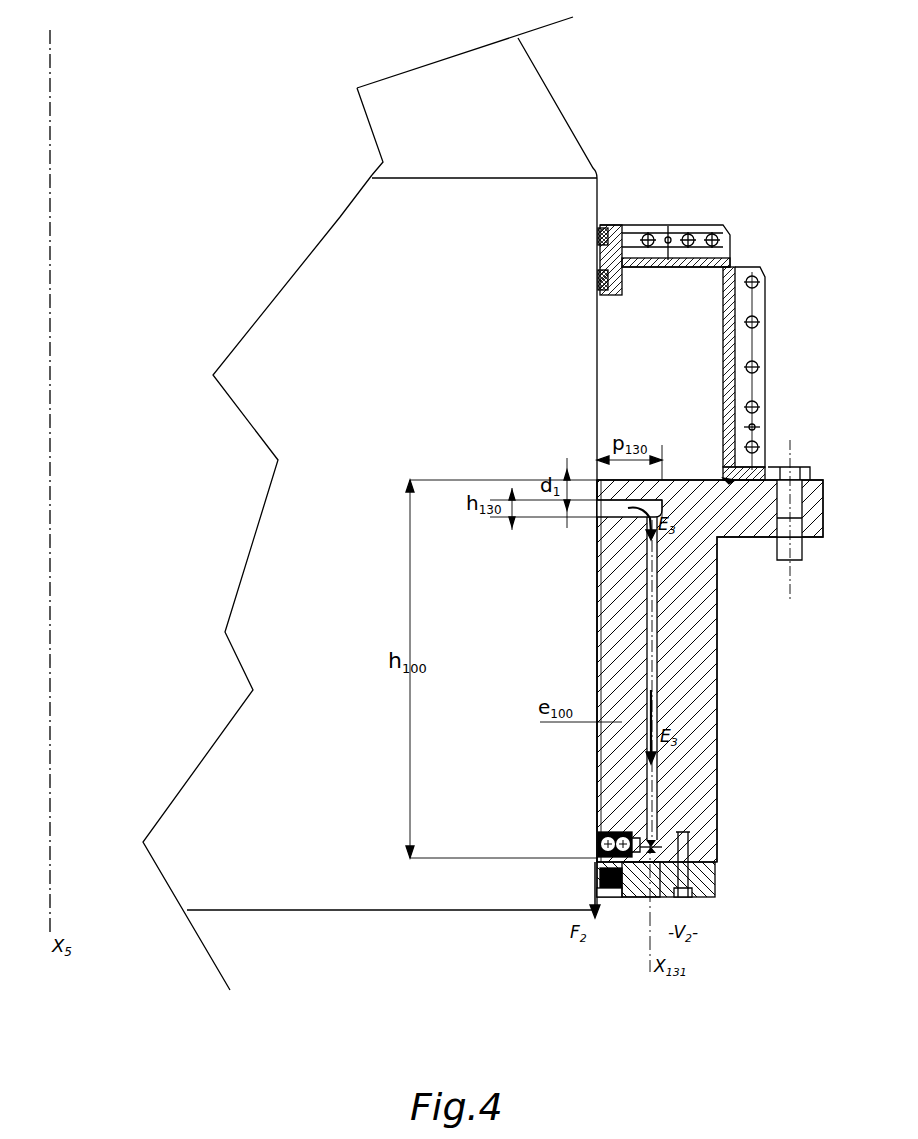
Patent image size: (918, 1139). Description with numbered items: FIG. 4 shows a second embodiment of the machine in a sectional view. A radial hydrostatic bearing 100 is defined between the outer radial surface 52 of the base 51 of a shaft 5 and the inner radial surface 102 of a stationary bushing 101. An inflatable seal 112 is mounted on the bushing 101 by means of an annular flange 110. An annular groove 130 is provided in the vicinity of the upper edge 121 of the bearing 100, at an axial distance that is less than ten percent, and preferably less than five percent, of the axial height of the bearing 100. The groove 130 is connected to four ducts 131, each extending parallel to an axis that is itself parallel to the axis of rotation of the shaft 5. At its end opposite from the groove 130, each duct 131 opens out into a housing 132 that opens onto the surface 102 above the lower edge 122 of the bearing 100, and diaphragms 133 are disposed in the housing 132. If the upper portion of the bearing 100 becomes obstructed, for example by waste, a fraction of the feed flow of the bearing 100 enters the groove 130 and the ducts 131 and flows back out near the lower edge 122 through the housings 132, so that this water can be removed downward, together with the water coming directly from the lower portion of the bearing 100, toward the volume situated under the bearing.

The shaft 5 is at (547, 133).
The base 51 is at (258, 750).
The outer radial surface 52 is at (608, 347).
The radial hydrostatic bearing 100 is at (593, 603).
The stationary bushing 101 is at (705, 745).
The inner radial surface 102 is at (593, 648).
The annular flange 110 is at (717, 862).
The inflatable seal 112 is at (612, 897).
The upper edge 121 is at (595, 482).
The lower edge 122 is at (597, 868).
The annular groove 130 is at (662, 503).
The duct 131 is at (655, 658).
The housing 132 is at (642, 900).
The diaphragm 133 is at (598, 834).